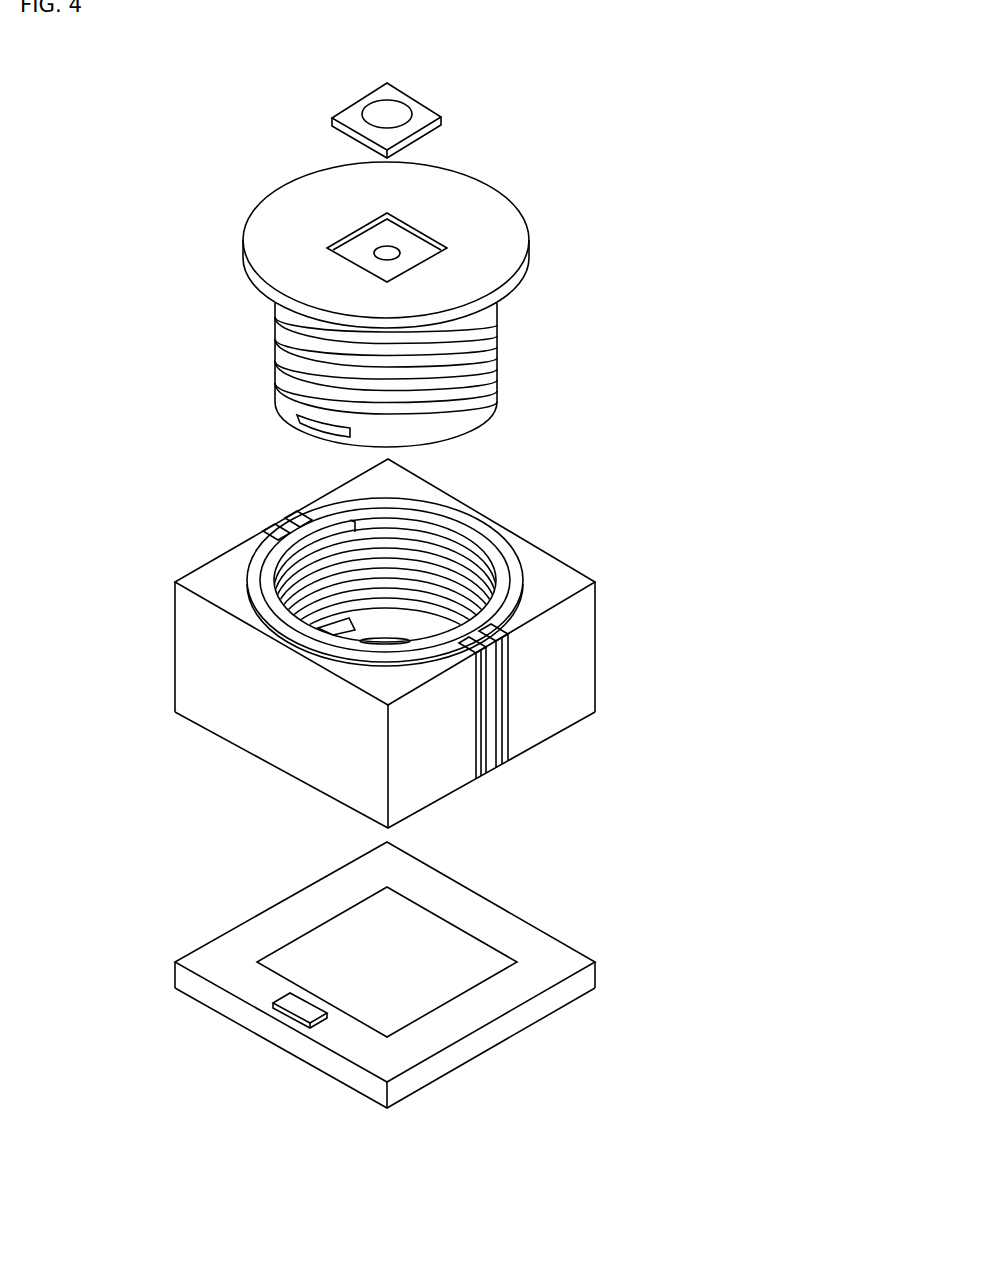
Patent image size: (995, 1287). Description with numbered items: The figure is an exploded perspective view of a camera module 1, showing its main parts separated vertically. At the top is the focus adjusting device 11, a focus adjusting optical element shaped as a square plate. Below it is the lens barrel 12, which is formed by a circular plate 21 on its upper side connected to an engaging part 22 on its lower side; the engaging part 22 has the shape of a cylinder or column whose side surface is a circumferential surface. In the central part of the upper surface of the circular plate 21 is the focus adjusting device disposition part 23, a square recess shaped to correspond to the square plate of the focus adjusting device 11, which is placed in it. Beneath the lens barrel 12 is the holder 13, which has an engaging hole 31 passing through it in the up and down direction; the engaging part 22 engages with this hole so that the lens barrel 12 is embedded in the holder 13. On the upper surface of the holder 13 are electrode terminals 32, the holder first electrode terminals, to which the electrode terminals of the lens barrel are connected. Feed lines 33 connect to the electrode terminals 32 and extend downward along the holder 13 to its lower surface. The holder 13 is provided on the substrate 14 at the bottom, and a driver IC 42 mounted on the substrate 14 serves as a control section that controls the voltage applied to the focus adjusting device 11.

The camera module 1 is at (220, 102).
The focus adjusting device 11 is at (421, 105).
The lens barrel 12 is at (253, 213).
The holder 13 is at (588, 648).
The substrate 14 is at (589, 979).
The circular plate 21 is at (511, 204).
The engaging part 22 is at (485, 397).
The focus adjusting device disposition part 23 is at (410, 247).
The engaging hole 31 is at (427, 545).
The electrode terminal 32 is at (508, 550).
The feed line 33 is at (293, 510).
The driver IC 42 is at (293, 1007).